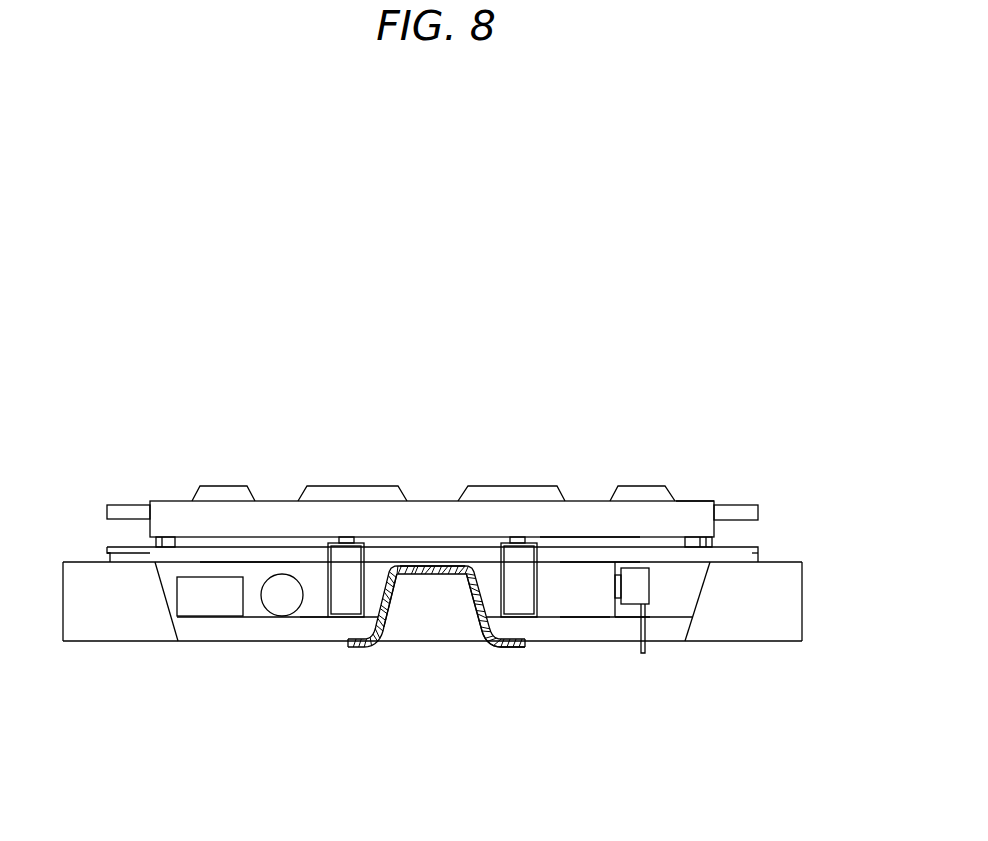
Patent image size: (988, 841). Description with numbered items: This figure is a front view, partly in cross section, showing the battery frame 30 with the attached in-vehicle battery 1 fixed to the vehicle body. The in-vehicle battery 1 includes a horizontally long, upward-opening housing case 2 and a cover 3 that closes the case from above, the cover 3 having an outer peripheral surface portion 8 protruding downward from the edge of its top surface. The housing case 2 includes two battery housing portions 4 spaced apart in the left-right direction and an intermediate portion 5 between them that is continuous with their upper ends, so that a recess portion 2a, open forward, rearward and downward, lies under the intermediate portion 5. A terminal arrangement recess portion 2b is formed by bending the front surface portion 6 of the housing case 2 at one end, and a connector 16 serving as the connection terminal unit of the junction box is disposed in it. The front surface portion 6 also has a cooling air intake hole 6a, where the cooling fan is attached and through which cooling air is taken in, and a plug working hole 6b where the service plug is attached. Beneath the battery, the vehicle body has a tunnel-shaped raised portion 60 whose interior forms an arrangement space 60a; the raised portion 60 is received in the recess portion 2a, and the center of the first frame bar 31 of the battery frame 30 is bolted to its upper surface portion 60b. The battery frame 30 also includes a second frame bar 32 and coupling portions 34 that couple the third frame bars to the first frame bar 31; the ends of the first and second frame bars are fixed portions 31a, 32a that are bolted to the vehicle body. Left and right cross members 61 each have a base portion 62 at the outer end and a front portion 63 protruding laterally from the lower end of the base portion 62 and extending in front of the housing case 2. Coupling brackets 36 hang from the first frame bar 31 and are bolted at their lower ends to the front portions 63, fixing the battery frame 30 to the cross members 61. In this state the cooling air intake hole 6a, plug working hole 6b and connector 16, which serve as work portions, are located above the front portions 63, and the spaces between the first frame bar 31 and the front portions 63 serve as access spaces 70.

The in-vehicle battery 1 is at (677, 512).
The housing case 2 is at (583, 603).
The recess portion 2a is at (387, 592).
The terminal arrangement recess portion 2b is at (627, 607).
The cover 3 is at (412, 510).
The battery housing portion 4 is at (250, 612).
The intermediate portion 5 is at (480, 598).
The front surface portion 6 is at (315, 608).
The cooling air intake hole 6a is at (283, 600).
The plug working hole 6b is at (185, 602).
The outer peripheral surface portion 8 is at (590, 512).
The connector 16 is at (648, 590).
The battery frame 30 is at (745, 507).
The first frame bar 31 is at (757, 553).
The fixed portion 31a is at (107, 553).
The second frame bar 32 is at (758, 515).
The fixed portion 32a is at (110, 512).
The coupling portion 34 is at (167, 542).
The coupling bracket 36 is at (330, 605).
The raised portion 60 is at (380, 612).
The arrangement space 60a is at (472, 606).
The upper surface portion 60b is at (430, 560).
The cross member 61 is at (83, 633).
The base portion 62 is at (107, 635).
The front portion 63 is at (263, 628).
The access space 70 is at (245, 568).